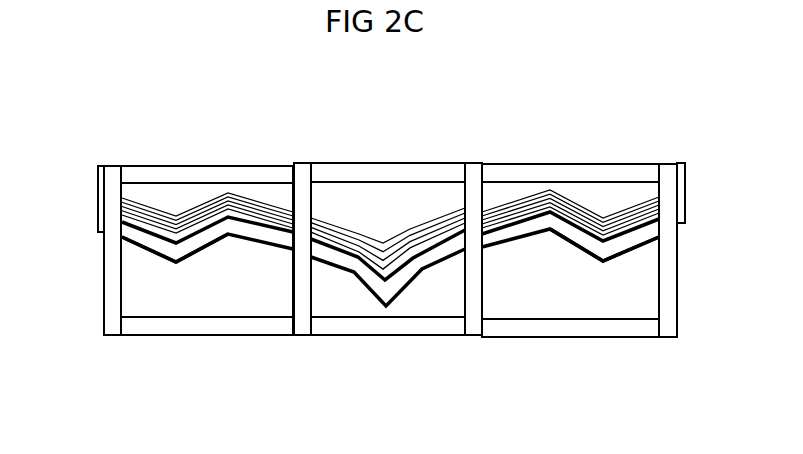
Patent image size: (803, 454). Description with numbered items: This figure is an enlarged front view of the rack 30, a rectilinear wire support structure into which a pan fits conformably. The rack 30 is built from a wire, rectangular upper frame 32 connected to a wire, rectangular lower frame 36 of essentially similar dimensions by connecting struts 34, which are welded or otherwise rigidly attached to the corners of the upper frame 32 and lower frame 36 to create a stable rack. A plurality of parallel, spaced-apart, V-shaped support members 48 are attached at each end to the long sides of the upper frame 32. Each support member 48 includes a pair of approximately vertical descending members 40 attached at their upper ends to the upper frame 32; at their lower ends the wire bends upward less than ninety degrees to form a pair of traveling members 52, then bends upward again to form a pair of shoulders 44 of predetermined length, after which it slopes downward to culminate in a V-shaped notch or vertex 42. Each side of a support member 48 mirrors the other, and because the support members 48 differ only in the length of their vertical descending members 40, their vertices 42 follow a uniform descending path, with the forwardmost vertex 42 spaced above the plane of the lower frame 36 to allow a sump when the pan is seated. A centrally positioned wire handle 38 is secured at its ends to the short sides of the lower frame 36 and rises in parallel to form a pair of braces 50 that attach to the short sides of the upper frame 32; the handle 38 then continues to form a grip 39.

The rack 30 is at (192, 147).
The upper frame 32 is at (575, 163).
The connecting struts 34 is at (104, 267).
The lower frame 36 is at (588, 338).
The wire handle 38 is at (395, 158).
The grip 39 is at (350, 162).
The vertical descending members 40 is at (97, 183).
The vertex 42 is at (383, 305).
The shoulders 44 is at (253, 245).
The V-shaped support members 48 is at (278, 203).
The braces 50 is at (293, 297).
The traveling members 52 is at (152, 256).